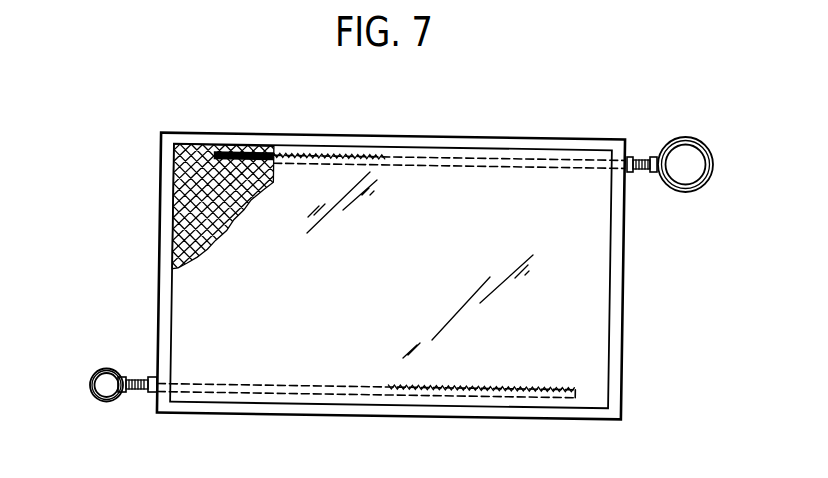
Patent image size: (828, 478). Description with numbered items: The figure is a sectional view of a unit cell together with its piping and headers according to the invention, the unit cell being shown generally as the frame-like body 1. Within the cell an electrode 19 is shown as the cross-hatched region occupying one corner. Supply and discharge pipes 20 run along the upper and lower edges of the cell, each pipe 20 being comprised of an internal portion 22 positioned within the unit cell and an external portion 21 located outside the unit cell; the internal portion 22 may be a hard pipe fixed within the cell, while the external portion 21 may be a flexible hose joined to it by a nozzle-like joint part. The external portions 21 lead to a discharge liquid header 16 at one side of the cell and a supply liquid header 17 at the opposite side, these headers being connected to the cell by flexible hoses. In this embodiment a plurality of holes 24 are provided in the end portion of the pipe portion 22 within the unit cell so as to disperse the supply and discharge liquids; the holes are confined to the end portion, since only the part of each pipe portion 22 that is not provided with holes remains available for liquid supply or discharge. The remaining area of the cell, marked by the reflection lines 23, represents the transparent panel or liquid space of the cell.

The frame 1 is at (567, 136).
The discharge liquid header 16 is at (690, 139).
The supply liquid header 17 is at (97, 373).
The electrode 19 is at (190, 150).
The supply and discharge pipes 20 is at (484, 160).
The external portion 21 is at (640, 157).
The internal portion 22 is at (433, 160).
The transparent panel 23 is at (332, 178).
The holes 24 is at (290, 156).